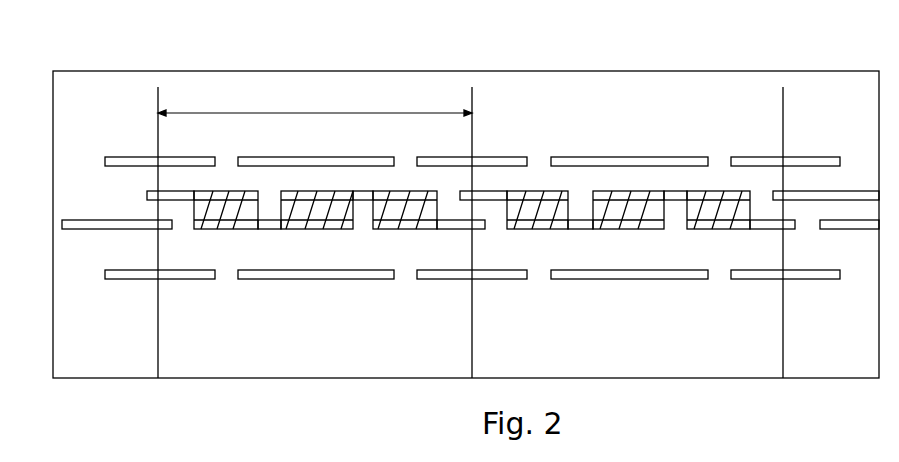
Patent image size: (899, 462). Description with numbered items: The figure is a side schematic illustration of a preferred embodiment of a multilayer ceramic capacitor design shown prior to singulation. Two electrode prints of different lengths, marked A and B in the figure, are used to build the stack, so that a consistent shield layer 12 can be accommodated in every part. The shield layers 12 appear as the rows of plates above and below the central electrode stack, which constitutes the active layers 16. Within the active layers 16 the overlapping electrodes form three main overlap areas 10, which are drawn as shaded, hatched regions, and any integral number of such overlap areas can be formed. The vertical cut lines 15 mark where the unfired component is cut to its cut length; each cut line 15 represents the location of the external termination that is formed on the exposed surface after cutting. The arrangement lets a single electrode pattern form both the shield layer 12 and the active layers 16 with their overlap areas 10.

The active overlap area 10 is at (713, 205).
The shield layer 12 is at (173, 160).
The cut line 15 is at (158, 87).
The active layer 16 is at (441, 183).